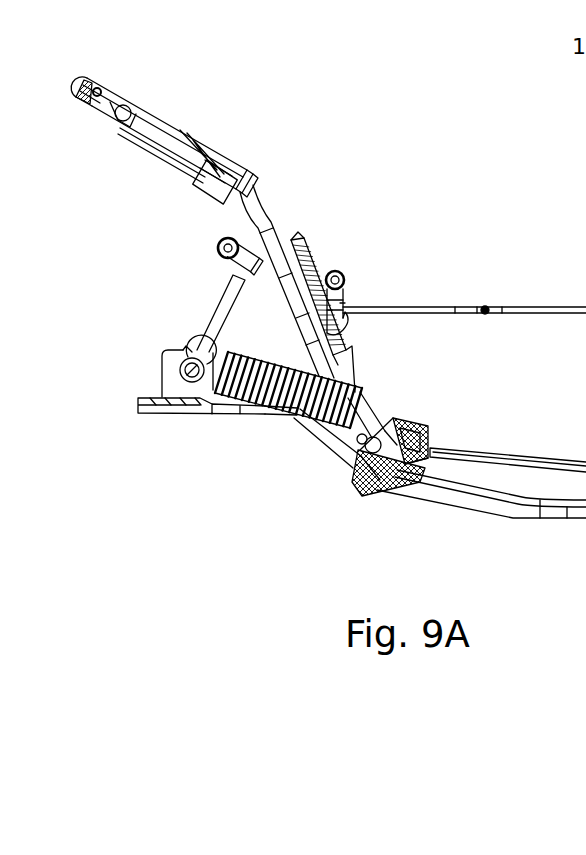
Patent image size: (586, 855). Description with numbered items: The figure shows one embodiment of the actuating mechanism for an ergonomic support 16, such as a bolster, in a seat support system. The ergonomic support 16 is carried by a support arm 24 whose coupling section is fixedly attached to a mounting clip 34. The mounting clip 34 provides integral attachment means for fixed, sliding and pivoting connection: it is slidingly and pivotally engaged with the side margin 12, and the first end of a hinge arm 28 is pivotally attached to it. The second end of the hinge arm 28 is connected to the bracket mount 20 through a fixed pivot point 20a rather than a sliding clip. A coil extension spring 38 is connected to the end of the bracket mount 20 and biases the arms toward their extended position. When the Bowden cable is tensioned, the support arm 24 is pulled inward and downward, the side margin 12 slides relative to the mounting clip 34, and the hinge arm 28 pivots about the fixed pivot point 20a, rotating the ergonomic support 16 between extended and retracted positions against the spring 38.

The ergonomic support 16 is at (170, 110).
The support arm 24 is at (268, 197).
The mounting clip 34 is at (320, 260).
The side margin 12 is at (348, 295).
The hinge arm 28 is at (208, 310).
The fixed pivot point 20a is at (187, 373).
The coil extension spring 38 is at (306, 416).
The bracket mount 20 is at (468, 502).